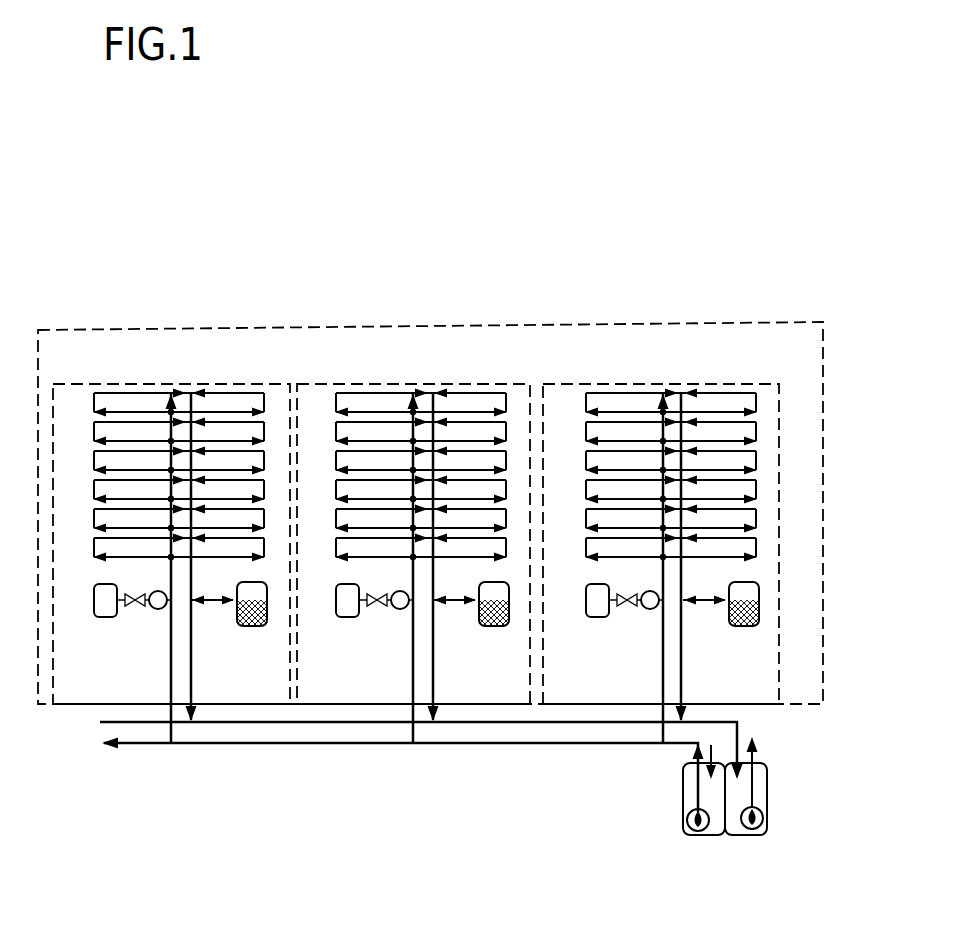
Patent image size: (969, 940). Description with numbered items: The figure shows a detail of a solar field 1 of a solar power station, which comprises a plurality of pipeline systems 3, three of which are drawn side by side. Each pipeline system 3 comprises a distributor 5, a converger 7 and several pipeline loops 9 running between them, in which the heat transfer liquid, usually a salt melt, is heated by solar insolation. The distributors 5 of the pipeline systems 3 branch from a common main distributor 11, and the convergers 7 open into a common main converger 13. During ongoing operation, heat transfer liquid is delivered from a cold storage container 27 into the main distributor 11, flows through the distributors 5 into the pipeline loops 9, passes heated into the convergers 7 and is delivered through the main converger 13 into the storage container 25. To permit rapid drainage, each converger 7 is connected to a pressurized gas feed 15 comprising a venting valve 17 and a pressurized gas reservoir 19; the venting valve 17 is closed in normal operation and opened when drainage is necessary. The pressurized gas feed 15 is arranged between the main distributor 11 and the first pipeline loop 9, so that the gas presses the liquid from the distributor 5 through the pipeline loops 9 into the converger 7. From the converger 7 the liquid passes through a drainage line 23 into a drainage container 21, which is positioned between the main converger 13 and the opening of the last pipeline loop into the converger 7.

The solar field 1 is at (541, 306).
The pipeline system 3 is at (165, 379).
The distributor 5 is at (663, 684).
The converger 7 is at (684, 668).
The pipeline loop 9 is at (758, 505).
The main distributor 11 is at (218, 744).
The main converger 13 is at (505, 723).
The pressurized gas feed 15 is at (610, 620).
The venting valve 17 is at (384, 607).
The pressurized gas reservoir 19 is at (340, 617).
The drainage container 21 is at (760, 592).
The drainage line 23 is at (456, 606).
The storage container 25 is at (768, 830).
The cold storage container 27 is at (684, 830).